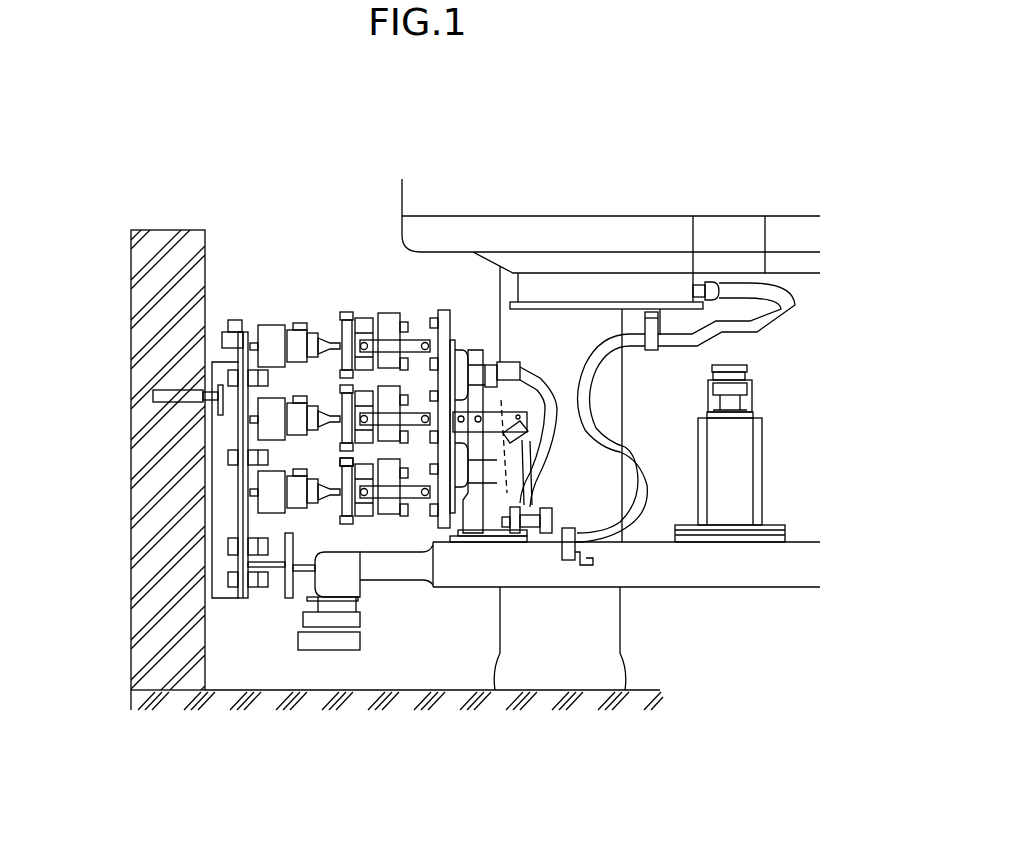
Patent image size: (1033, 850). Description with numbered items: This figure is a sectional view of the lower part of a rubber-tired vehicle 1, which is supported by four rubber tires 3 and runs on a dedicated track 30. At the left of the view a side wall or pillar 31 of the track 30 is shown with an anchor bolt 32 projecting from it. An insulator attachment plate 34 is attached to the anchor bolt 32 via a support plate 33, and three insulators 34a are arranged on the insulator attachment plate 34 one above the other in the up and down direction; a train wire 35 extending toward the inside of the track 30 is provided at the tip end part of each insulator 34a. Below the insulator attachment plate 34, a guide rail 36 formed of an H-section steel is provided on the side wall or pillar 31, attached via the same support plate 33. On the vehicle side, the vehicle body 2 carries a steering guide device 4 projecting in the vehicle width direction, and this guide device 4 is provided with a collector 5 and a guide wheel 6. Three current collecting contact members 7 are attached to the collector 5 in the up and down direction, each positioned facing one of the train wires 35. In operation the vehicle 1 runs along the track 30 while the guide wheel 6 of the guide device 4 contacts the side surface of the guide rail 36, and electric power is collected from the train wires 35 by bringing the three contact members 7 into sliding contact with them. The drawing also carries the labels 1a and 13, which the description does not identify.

The vehicle 1 is at (571, 335).
The connecting portion 1a is at (344, 446).
The vehicle body 2 is at (402, 196).
The rubber tires 3 is at (620, 620).
The steering guide device 4 is at (493, 588).
The collector 5 is at (452, 316).
The guide wheel 6 is at (302, 568).
The current collecting contact members 7 is at (388, 313).
The floor 13 is at (633, 690).
The dedicated track 30 is at (196, 464).
The side wall or pillar 31 is at (204, 247).
The anchor bolt 32 is at (208, 393).
The support plate 33 is at (223, 593).
The insulator attachment plate 34 is at (246, 332).
The insulators 34a is at (300, 322).
The train wire 35 is at (340, 338).
The guide rail 36 is at (272, 568).